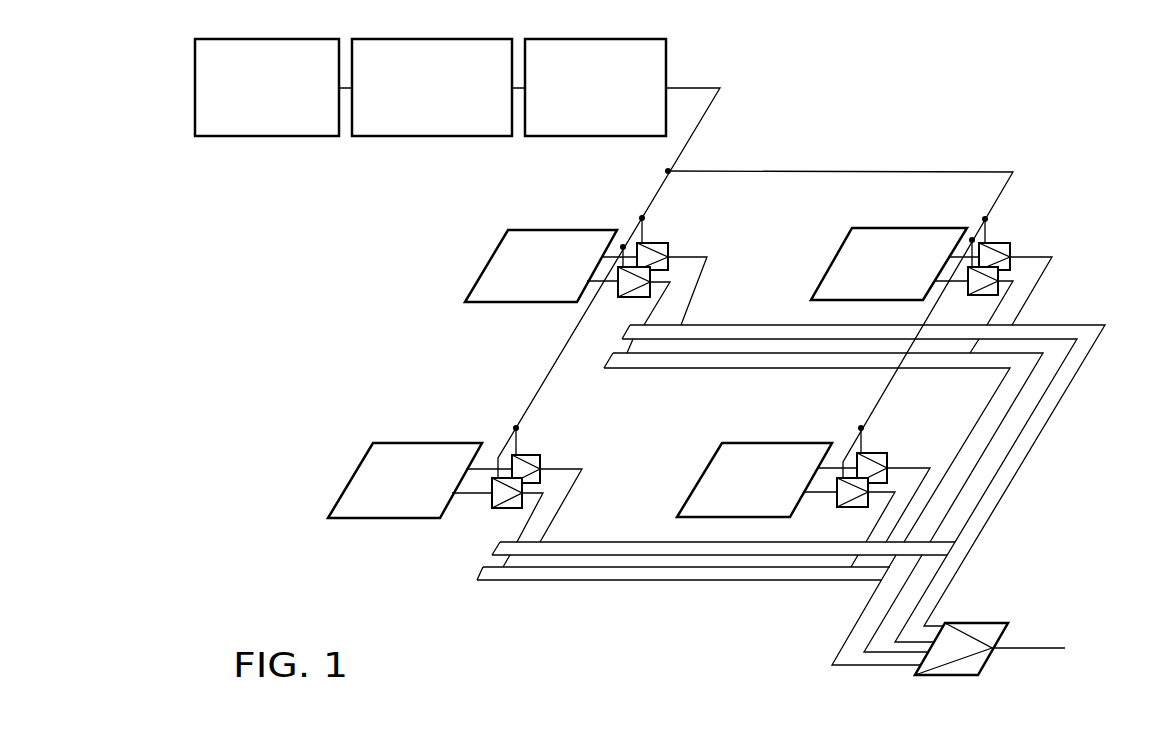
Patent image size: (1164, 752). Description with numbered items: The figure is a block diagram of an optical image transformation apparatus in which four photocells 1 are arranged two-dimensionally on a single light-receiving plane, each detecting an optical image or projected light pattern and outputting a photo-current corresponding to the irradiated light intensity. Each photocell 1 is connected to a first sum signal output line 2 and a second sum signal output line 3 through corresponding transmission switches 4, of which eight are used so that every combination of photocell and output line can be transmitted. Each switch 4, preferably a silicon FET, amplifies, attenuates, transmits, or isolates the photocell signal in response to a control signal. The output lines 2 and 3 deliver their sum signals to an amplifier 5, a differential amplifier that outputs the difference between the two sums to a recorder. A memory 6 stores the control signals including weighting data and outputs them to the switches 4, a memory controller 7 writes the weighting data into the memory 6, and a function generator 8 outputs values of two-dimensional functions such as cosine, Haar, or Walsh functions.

The photocell 1 is at (490, 262).
The first sum signal output line 2 is at (704, 325).
The second sum signal output line 3 is at (688, 368).
The transmission switch 4 is at (668, 247).
The amplifier 5 is at (977, 620).
The memory 6 is at (594, 137).
The memory controller 7 is at (430, 137).
The function generator 8 is at (266, 137).